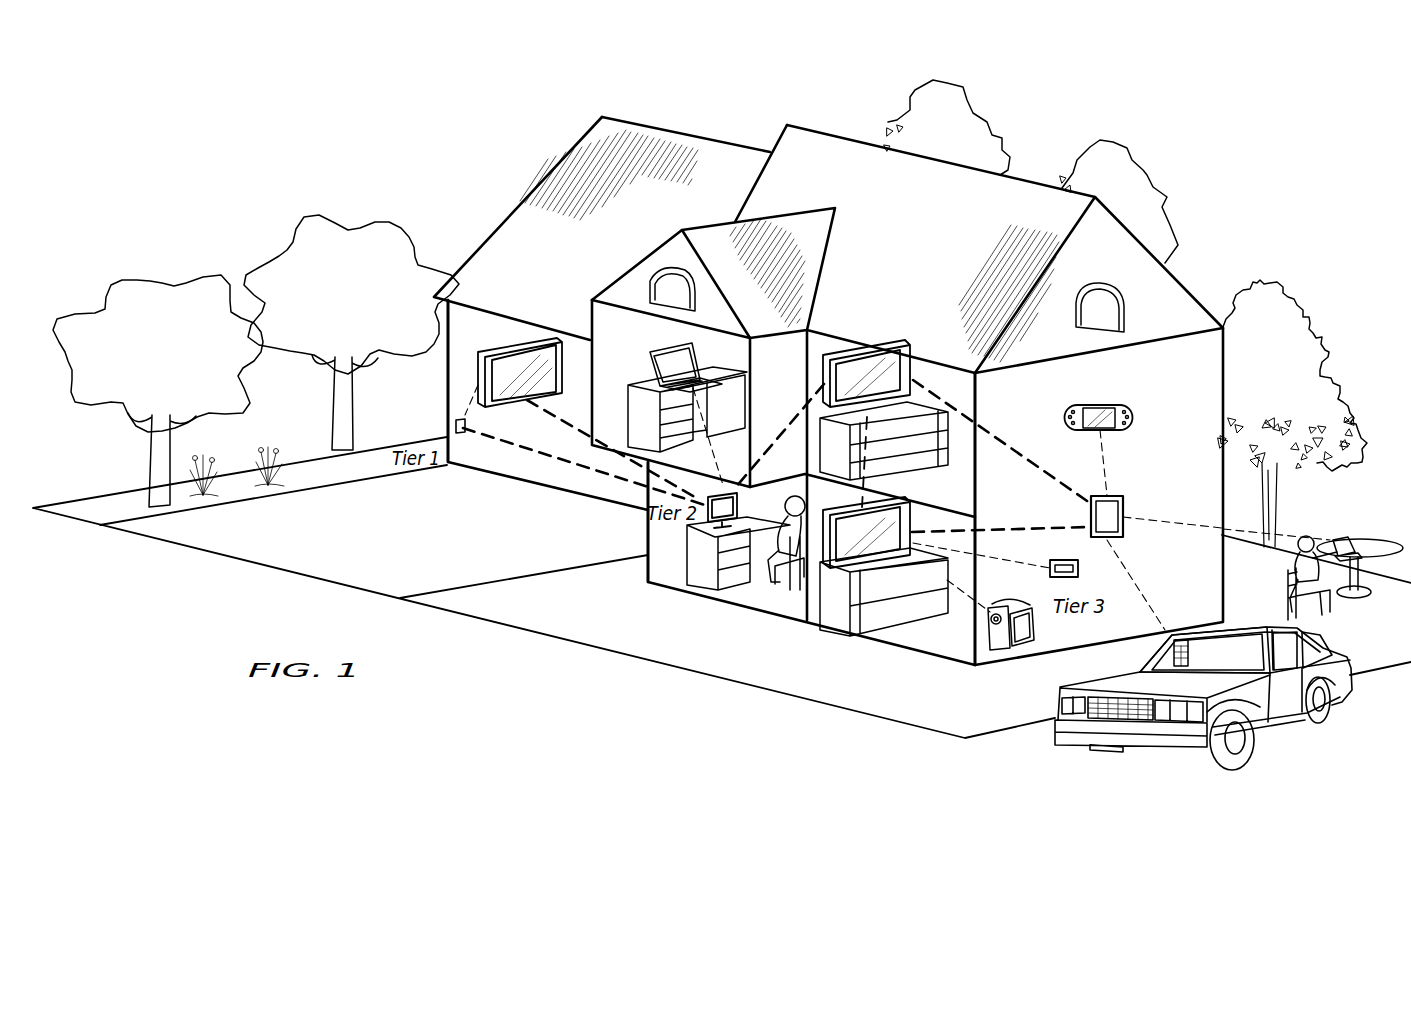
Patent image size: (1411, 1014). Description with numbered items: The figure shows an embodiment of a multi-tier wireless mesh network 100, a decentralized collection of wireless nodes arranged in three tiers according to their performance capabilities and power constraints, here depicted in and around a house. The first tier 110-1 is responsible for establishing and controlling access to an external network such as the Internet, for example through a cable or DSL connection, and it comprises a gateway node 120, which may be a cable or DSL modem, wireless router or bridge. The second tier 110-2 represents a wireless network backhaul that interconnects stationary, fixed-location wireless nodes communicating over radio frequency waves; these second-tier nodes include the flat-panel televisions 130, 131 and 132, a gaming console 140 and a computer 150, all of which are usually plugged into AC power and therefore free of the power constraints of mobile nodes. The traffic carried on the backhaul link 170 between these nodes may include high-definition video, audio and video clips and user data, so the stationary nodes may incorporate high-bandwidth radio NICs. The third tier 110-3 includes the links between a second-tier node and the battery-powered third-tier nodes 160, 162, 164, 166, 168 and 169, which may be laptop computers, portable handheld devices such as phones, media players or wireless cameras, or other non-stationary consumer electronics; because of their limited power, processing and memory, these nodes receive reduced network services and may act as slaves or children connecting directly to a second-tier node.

The multi-tier wireless mesh network 100 is at (1236, 169).
The first tier 110-1 is at (395, 455).
The second tier 110-2 is at (667, 528).
The third tier 110-3 is at (1068, 613).
The gateway node 120 is at (456, 427).
The flat-panel television 130 is at (502, 333).
The flat-panel television 131 is at (834, 352).
The flat-panel television 132 is at (823, 570).
The gaming console 140 is at (1120, 496).
The computer 150 is at (722, 492).
The tier-3 node 160 is at (657, 376).
The tier-3 node 162 is at (1005, 655).
The tier-3 node 164 is at (1117, 407).
The tier-3 node 166 is at (1348, 536).
The tier-3 node 168 is at (1189, 639).
The tier-3 node 169 is at (1066, 559).
The backhaul link 170 is at (568, 458).